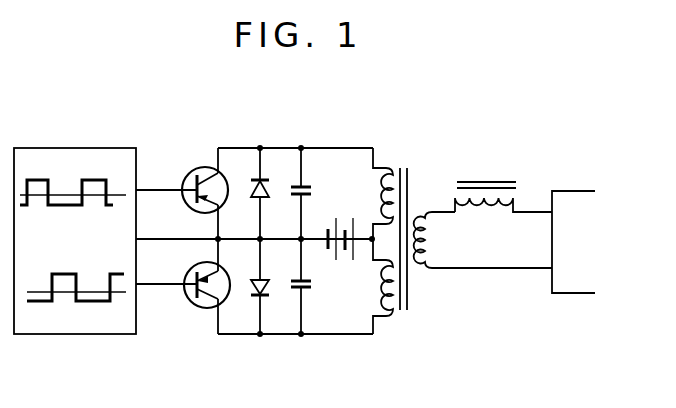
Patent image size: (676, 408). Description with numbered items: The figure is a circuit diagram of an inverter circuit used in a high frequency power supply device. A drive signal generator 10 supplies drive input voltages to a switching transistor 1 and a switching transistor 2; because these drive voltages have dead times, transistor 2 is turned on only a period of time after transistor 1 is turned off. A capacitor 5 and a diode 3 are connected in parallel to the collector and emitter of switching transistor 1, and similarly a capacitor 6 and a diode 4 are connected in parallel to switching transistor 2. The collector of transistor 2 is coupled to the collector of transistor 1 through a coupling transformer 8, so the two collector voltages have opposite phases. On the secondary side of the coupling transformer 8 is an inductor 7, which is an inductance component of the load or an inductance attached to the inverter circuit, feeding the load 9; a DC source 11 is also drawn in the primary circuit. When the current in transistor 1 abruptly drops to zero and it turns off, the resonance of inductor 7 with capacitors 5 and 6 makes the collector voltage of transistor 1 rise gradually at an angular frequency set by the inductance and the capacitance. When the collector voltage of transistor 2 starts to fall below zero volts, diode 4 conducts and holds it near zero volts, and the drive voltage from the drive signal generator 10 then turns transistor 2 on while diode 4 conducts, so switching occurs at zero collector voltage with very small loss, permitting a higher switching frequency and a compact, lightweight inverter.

The switching transistor 1 is at (198, 168).
The switching transistor 2 is at (200, 309).
The diode 3 is at (270, 188).
The diode 4 is at (255, 300).
The capacitor 5 is at (314, 186).
The capacitor 6 is at (308, 285).
The inductor 7 is at (485, 181).
The coupling transformer 8 is at (407, 311).
The load 9 is at (562, 295).
The drive signal generator 10 is at (37, 335).
The DC power source (battery) 11 is at (345, 214).